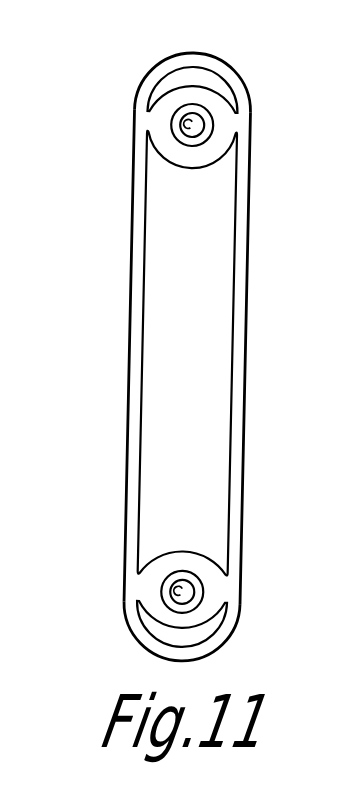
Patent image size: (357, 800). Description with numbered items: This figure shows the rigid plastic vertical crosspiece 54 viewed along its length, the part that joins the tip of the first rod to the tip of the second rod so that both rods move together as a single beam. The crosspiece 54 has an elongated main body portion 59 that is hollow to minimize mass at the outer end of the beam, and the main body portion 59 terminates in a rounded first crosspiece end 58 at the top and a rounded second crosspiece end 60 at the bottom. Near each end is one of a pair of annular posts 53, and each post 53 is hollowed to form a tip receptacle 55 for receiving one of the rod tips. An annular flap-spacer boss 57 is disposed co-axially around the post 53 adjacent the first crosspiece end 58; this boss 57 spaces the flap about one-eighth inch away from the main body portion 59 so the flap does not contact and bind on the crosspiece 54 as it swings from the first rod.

The annular post 53 is at (212, 125).
The crosspiece 54 is at (130, 248).
The tip receptacle 55 is at (181, 126).
The annular flap-spacer boss 57 is at (217, 105).
The first crosspiece end 58 is at (238, 82).
The main body portion 59 is at (158, 320).
The second crosspiece end 60 is at (146, 646).